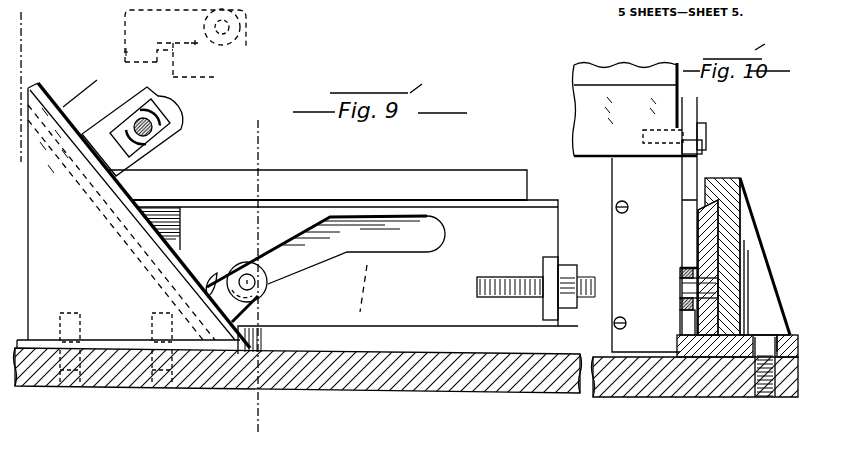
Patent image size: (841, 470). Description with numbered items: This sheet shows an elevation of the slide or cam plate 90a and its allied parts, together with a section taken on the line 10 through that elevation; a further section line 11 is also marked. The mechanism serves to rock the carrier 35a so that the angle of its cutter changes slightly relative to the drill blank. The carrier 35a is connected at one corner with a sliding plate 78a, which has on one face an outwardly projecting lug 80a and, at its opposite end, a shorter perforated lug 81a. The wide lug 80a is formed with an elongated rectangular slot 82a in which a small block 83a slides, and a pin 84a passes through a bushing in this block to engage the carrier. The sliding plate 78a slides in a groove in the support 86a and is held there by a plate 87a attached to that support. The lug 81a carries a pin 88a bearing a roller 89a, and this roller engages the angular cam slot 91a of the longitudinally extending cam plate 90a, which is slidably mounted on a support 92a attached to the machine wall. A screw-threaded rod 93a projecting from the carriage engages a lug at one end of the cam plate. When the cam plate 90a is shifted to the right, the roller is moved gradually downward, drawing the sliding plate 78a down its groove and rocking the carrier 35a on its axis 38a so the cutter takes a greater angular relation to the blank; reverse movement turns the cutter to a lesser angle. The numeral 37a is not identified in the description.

In FIG. 9, the section line 10 is at (263, 135).
In FIG. 10, the section line 10 is at (660, 392).
In FIG. 9, the section line 11 is at (128, 87).
In FIG. 9, the carrier 35a is at (126, 52).
In FIG. 10, the carrier 35a is at (587, 103).
In FIG. 9, the bracket (phantom) 37a is at (184, 58).
In FIG. 9, the axis 38a is at (239, 39).
In FIG. 10, the sliding plate 78a is at (688, 228).
In FIG. 9, the lug 80a is at (113, 116).
In FIG. 10, the lug 80a is at (697, 103).
In FIG. 9, the lug 81a is at (213, 276).
In FIG. 9, the slot 82a is at (119, 143).
In FIG. 9, the block 83a is at (157, 122).
In FIG. 9, the pin 84a is at (170, 139).
In FIG. 10, the pin 84a is at (706, 130).
In FIG. 9, the support 86a is at (97, 322).
In FIG. 9, the plate 87a is at (112, 116).
In FIG. 9, the pin 88a is at (244, 264).
In FIG. 10, the pin 88a is at (681, 285).
In FIG. 9, the roller 89a is at (268, 283).
In FIG. 10, the roller 89a is at (697, 312).
In FIG. 9, the cam plate 90a is at (393, 315).
In FIG. 10, the cam plate 90a is at (712, 230).
In FIG. 9, the cam slot 91a is at (381, 215).
In FIG. 10, the cam slot 91a is at (710, 260).
In FIG. 9, the support 92a is at (462, 172).
In FIG. 10, the support 92a is at (744, 264).
In FIG. 9, the screw-threaded rod 93a is at (507, 276).